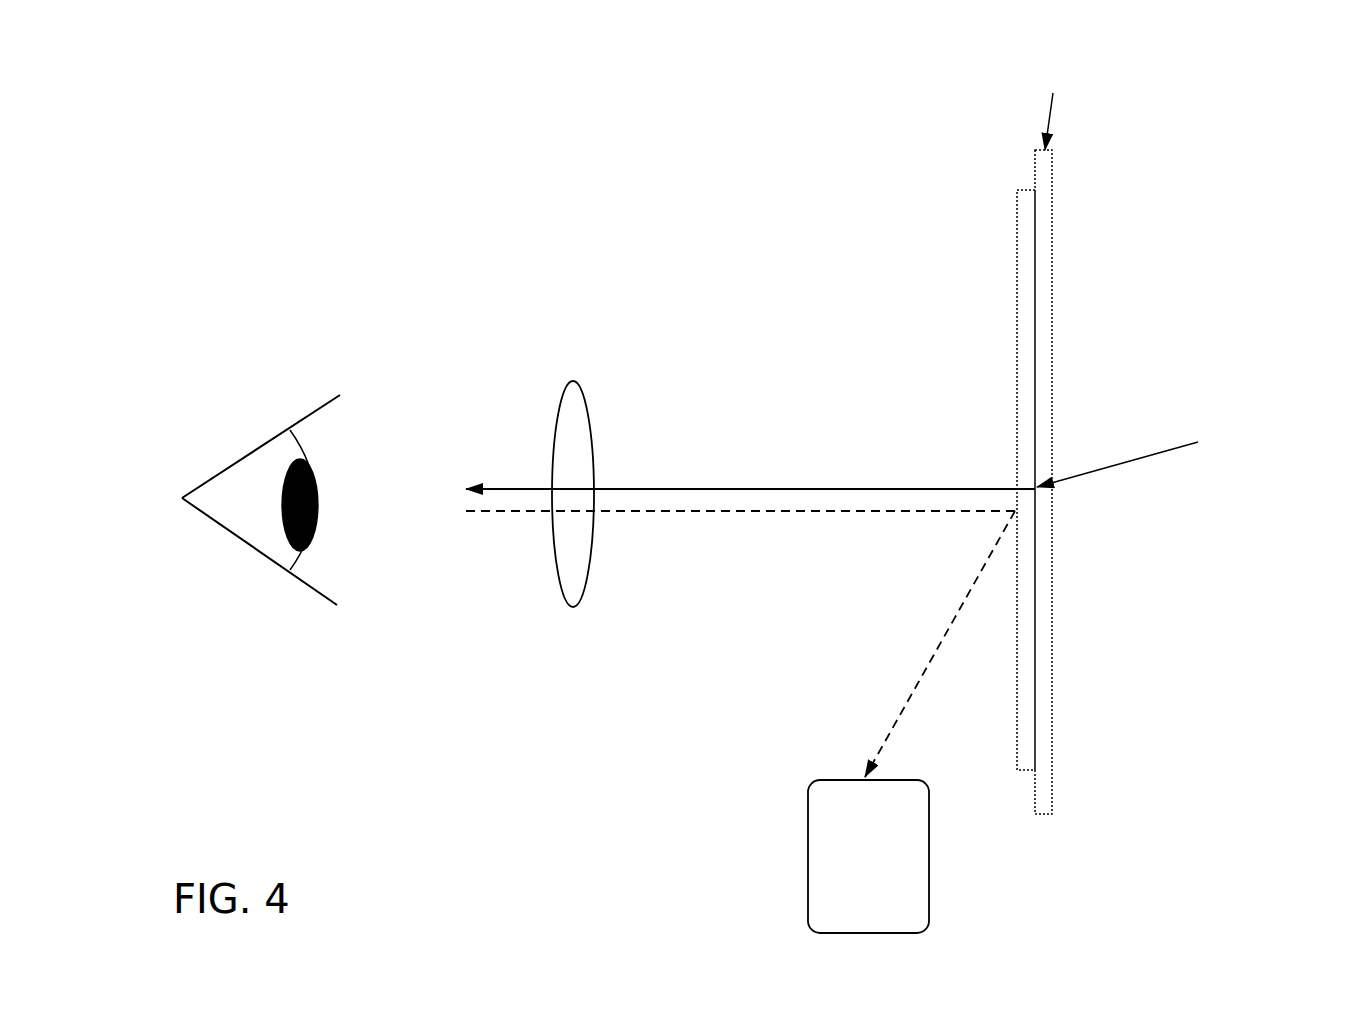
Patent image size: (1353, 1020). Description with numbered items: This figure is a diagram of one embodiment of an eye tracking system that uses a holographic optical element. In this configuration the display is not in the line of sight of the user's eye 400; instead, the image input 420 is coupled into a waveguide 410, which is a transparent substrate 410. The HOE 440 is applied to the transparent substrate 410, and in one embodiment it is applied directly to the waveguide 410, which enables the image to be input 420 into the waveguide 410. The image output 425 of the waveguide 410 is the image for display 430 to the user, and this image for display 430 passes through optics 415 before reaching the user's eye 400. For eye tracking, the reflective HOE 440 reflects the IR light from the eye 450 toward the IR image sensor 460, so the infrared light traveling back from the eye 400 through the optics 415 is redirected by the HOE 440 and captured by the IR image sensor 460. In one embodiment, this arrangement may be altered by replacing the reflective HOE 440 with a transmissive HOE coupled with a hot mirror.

The eye 400 is at (261, 487).
The waveguide 410 is at (1054, 305).
The optics 415 is at (562, 456).
The image input 420 is at (1052, 82).
The image output 425 is at (1183, 428).
The image for display 430 is at (750, 458).
The reflective HOE 440 is at (1017, 247).
The IR light from the eye 450 is at (740, 644).
The IR image sensor 460 is at (868, 856).